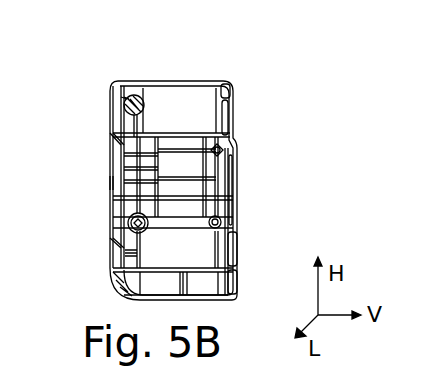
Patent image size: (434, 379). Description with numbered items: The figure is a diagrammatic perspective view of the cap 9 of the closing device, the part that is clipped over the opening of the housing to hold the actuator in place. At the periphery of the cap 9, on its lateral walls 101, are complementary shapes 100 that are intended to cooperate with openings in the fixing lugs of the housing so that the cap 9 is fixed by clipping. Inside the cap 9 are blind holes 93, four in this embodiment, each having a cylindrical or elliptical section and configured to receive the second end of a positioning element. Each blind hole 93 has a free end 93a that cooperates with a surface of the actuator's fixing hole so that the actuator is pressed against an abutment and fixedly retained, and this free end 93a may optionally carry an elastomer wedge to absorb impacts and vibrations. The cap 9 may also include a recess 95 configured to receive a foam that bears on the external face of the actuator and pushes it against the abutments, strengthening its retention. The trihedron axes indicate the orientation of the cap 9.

The cap 9 is at (255, 69).
The blind hole 93 is at (128, 82).
The free end 93a is at (162, 84).
The recess 95 is at (110, 142).
The complementary shape 100 is at (232, 112).
The lateral wall 101 is at (110, 182).